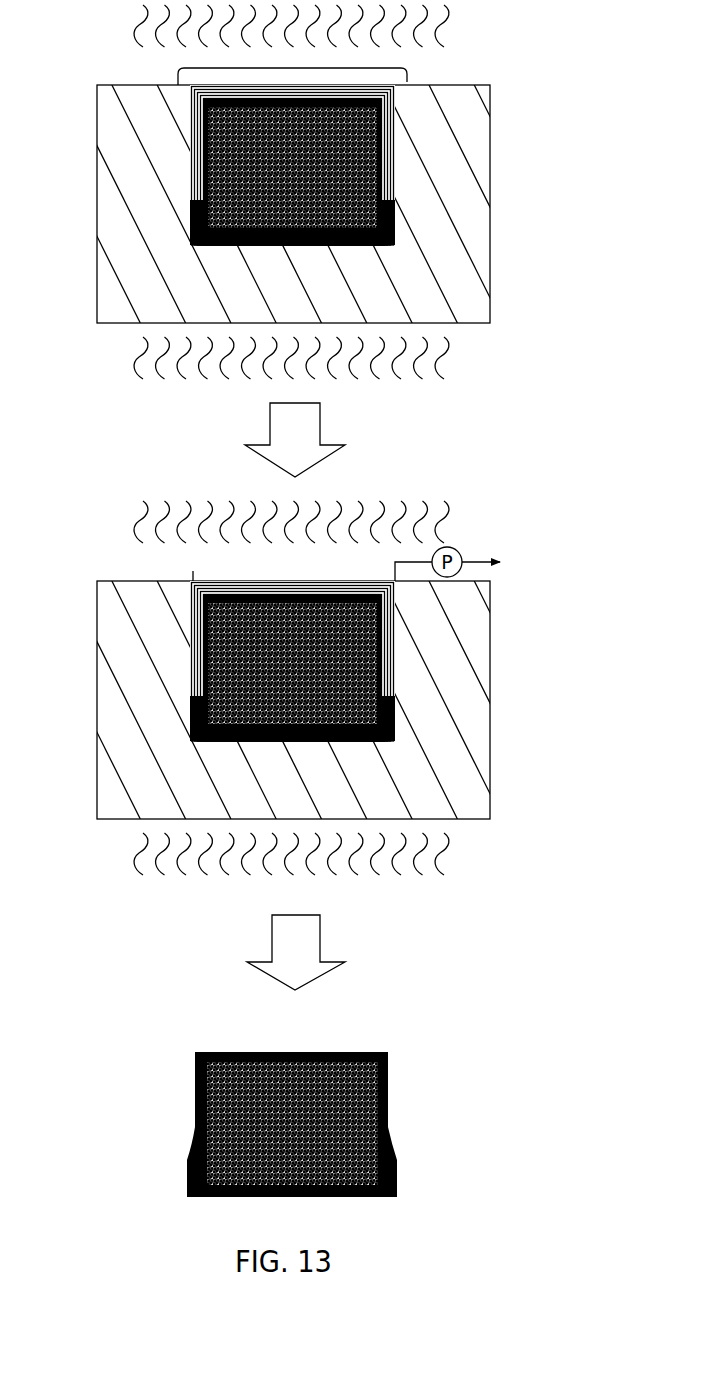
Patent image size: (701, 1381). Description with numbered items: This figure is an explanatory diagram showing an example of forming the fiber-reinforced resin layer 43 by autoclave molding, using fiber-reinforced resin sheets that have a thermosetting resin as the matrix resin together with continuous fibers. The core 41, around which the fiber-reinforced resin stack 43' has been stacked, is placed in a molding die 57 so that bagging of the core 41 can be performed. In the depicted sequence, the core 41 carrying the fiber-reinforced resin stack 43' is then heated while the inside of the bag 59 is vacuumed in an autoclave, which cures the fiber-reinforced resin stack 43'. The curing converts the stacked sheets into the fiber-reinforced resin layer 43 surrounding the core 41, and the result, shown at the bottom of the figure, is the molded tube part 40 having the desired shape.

The tube part 40 is at (382, 1036).
The core 41 is at (233, 182).
The fiber-reinforced resin layer 43 is at (326, 1124).
The fiber-reinforced resin stack 43' is at (375, 414).
The molding die 57 is at (490, 148).
The bag 59 is at (407, 82).